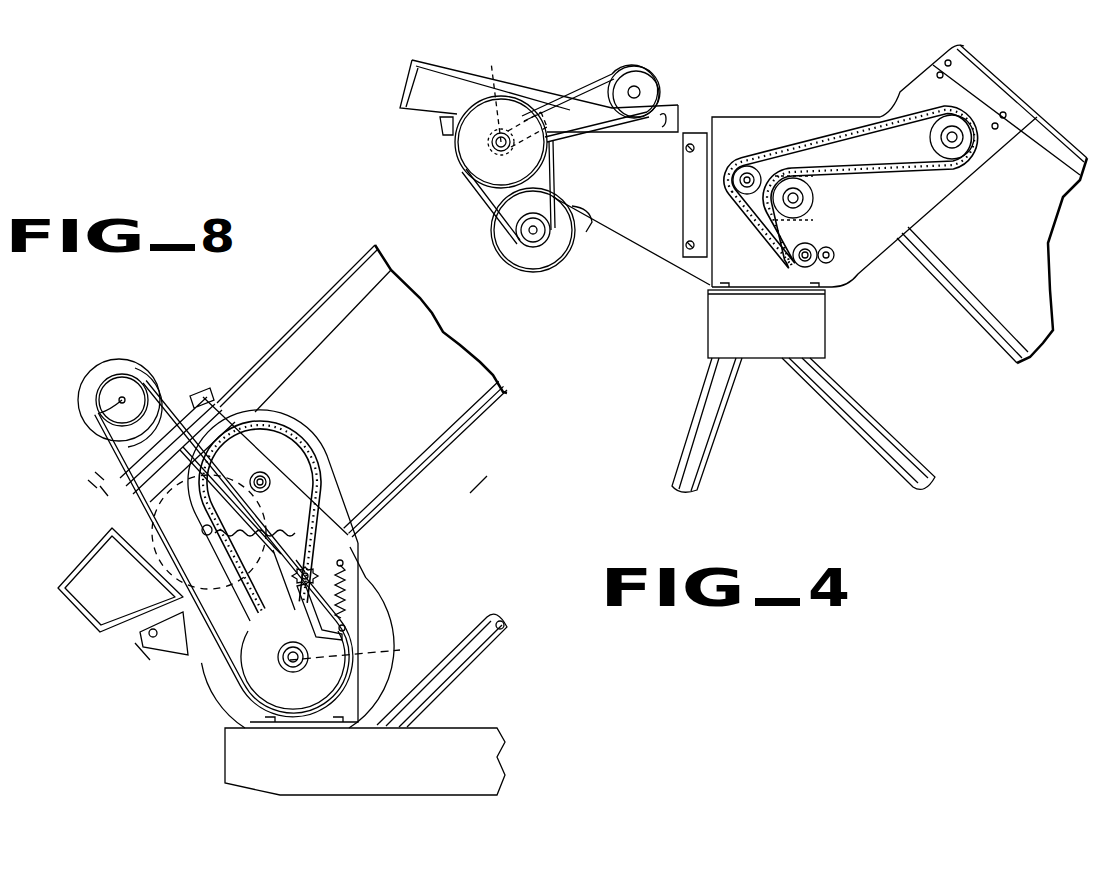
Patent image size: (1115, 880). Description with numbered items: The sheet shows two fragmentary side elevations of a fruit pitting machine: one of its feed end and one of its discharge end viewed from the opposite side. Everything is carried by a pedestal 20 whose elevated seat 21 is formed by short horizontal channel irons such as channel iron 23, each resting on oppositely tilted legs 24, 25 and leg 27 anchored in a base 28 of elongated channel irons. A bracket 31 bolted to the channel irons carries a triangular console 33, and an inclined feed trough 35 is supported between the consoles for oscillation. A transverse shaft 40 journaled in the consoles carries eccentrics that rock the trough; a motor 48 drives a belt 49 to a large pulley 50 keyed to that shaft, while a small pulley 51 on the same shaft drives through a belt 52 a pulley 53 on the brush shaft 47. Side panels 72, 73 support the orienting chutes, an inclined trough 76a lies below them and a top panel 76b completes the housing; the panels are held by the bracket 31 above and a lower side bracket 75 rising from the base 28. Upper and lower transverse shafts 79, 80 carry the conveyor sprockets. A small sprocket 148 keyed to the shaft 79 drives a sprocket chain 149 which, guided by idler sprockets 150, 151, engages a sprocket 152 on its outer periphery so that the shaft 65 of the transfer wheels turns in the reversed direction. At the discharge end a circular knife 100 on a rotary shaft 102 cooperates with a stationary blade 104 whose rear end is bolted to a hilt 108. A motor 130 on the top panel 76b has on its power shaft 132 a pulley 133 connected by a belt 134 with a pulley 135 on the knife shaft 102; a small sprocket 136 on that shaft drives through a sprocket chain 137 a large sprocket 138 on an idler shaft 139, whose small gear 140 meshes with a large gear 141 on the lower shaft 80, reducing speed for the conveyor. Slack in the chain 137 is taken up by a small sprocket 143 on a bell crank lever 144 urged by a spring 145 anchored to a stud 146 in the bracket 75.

In FIG. 4, the pedestal 20 is at (719, 460).
In FIG. 8, the pedestal 20 is at (500, 744).
In FIG. 4, the elevated seat 21 is at (713, 342).
In FIG. 4, the channel iron 23 is at (787, 341).
In FIG. 4, the leg 24 is at (710, 408).
In FIG. 4, the leg 25 is at (855, 405).
In FIG. 8, the leg 27 is at (508, 629).
In FIG. 8, the base 28 is at (498, 762).
In FIG. 4, the bracket 31 is at (907, 219).
In FIG. 4, the triangular console 33 is at (633, 184).
In FIG. 4, the inclined feed trough 35 is at (422, 81).
In FIG. 4, the transverse shaft 40 is at (497, 142).
In FIG. 4, the shaft 47 is at (636, 90).
In FIG. 4, the motor 48 is at (535, 258).
In FIG. 4, the belt 49 is at (480, 184).
In FIG. 4, the large pulley 50 is at (470, 133).
In FIG. 4, the small pulley 51 is at (501, 91).
In FIG. 4, the belt 52 is at (583, 98).
In FIG. 4, the pulley 53 is at (622, 75).
In FIG. 4, the shaft 65 is at (800, 198).
In FIG. 8, the side panel 72 is at (427, 377).
In FIG. 4, the side panel 73 is at (1027, 272).
In FIG. 8, the lower side bracket 75 is at (333, 548).
In FIG. 4, the inclined trough 76a is at (1008, 353).
In FIG. 8, the inclined trough 76a is at (452, 432).
In FIG. 4, the top panel 76b is at (1047, 128).
In FIG. 8, the top panel 76b is at (345, 280).
In FIG. 4, the upper transverse shaft 79 is at (952, 146).
In FIG. 8, the lower transverse shaft 80 is at (207, 530).
In FIG. 8, the circular knife 100 is at (233, 703).
In FIG. 8, the rotary shaft 102 is at (287, 658).
In FIG. 8, the stationary blade 104 is at (173, 650).
In FIG. 8, the hilt 108 is at (145, 636).
In FIG. 8, the motor 130 is at (122, 358).
In FIG. 8, the power shaft 132 is at (118, 400).
In FIG. 8, the pulley 133 is at (108, 408).
In FIG. 8, the belt 134 is at (118, 516).
In FIG. 8, the pulley 135 is at (320, 701).
In FIG. 8, the small sprocket 136 is at (350, 660).
In FIG. 8, the sprocket chain 137 is at (307, 437).
In FIG. 8, the large sprocket 138 is at (263, 443).
In FIG. 8, the idler shaft 139 is at (270, 478).
In FIG. 8, the small gear 140 is at (272, 483).
In FIG. 8, the large gear 141 is at (118, 548).
In FIG. 8, the small sprocket 143 is at (310, 566).
In FIG. 8, the bell crank lever 144 is at (312, 610).
In FIG. 8, the spring 145 is at (343, 618).
In FIG. 8, the stud 146 is at (342, 567).
In FIG. 4, the small sprocket 148 is at (925, 125).
In FIG. 4, the sprocket chain 149 is at (805, 152).
In FIG. 4, the idler sprocket 150 is at (752, 194).
In FIG. 4, the idler sprocket 151 is at (792, 258).
In FIG. 4, the sprocket 152 is at (823, 204).